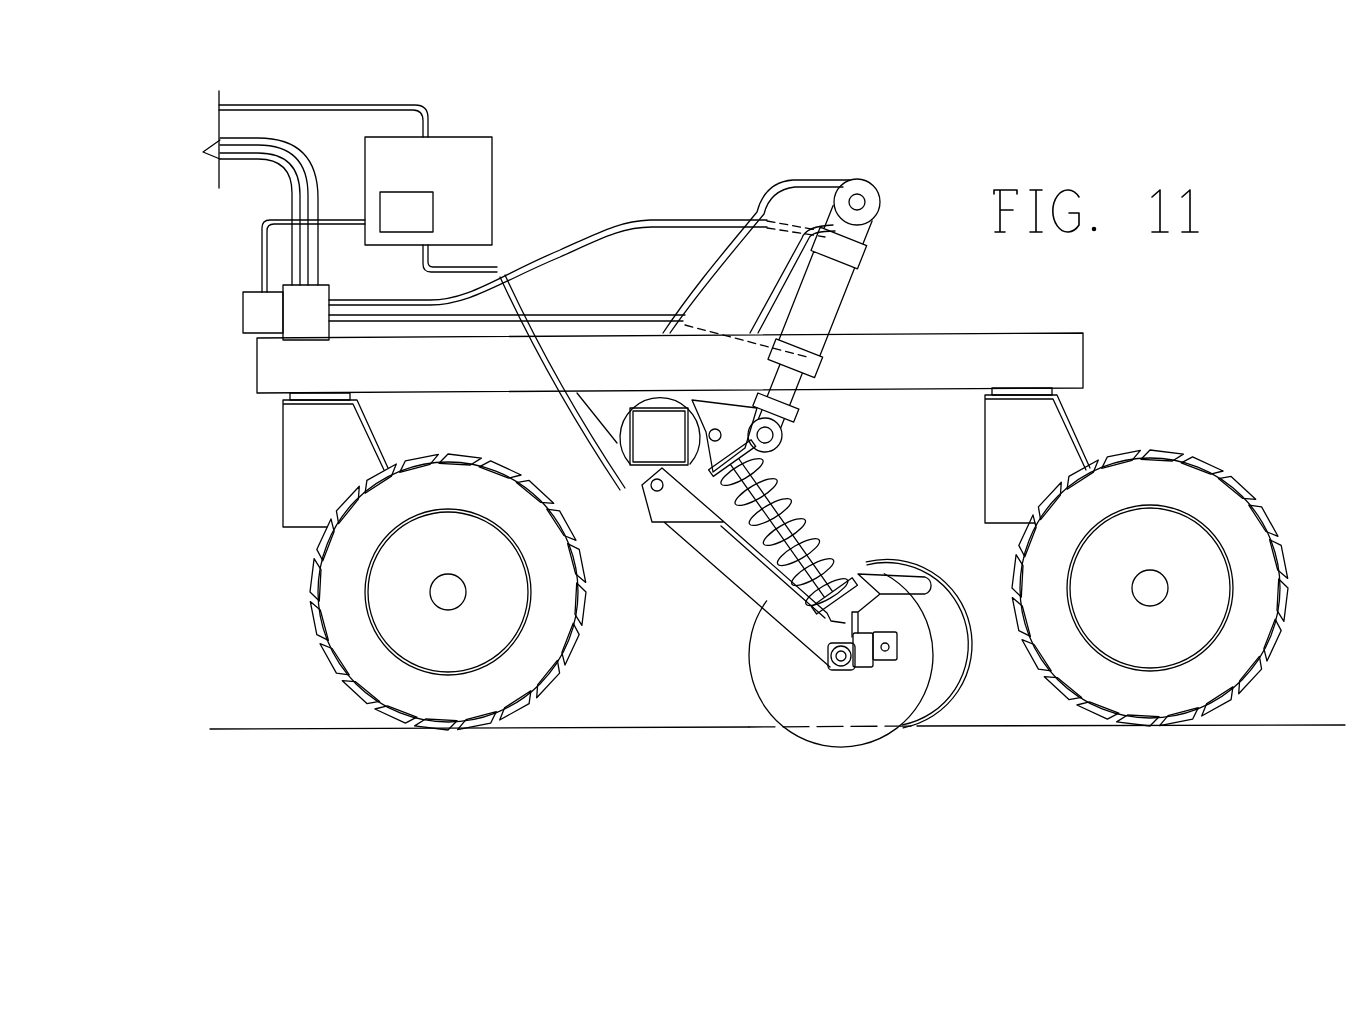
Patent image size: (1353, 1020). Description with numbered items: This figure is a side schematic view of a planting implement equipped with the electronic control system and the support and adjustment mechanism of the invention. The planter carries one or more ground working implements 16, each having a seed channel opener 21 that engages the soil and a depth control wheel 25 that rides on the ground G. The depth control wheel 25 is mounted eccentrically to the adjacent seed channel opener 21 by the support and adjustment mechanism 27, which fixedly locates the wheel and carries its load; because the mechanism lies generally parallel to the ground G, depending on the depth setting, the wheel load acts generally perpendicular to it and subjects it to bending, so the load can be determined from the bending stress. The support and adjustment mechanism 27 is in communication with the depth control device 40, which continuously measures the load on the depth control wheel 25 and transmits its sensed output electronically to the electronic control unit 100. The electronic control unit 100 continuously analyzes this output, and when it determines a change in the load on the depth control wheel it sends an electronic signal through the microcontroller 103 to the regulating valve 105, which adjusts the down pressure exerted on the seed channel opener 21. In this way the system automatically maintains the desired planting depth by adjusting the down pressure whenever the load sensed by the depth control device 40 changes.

The electronic control unit 100 is at (492, 188).
The microcontroller 103 is at (407, 192).
The regulating valve 105 is at (303, 315).
The ground working implement 16 is at (697, 587).
The seed channel opener 21 is at (753, 682).
The depth control wheel 25 is at (963, 657).
The support and adjustment mechanism 27 is at (887, 660).
The depth control device 40 is at (860, 640).
The ground G is at (580, 729).